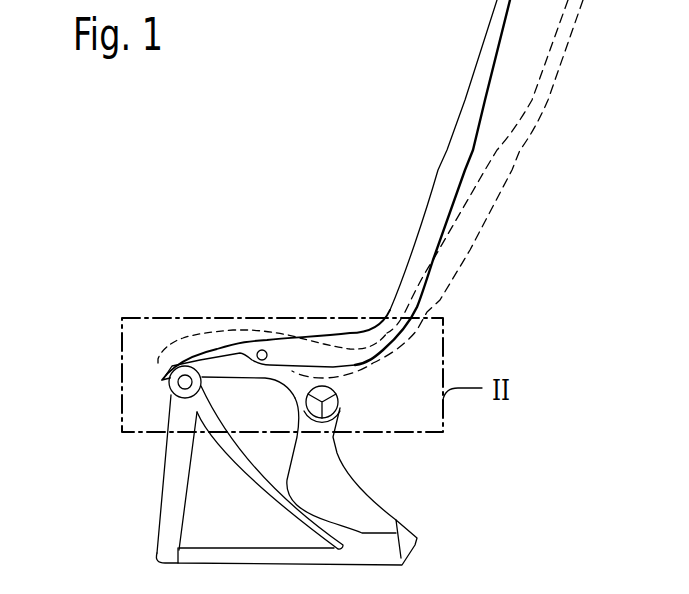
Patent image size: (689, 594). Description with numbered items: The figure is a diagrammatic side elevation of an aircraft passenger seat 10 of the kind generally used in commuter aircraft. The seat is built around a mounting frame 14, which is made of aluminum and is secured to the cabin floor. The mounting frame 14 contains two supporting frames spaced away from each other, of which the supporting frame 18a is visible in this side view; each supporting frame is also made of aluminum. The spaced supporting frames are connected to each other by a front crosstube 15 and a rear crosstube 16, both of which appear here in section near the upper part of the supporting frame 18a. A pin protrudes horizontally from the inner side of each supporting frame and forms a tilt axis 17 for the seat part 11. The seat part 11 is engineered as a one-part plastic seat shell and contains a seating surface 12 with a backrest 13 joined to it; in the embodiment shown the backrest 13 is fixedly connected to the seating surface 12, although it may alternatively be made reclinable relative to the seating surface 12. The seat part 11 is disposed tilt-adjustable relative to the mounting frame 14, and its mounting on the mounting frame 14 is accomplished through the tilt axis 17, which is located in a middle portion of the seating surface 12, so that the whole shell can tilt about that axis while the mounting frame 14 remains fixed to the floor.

The aircraft passenger seat 10 is at (313, 133).
The seat part 11 is at (355, 333).
The seating surface 12 is at (265, 338).
The backrest 13 is at (423, 218).
The mounting frame 14 is at (167, 470).
The front crosstube 15 is at (178, 384).
The rear crosstube 16 is at (331, 406).
The tilt axis 17 is at (262, 361).
The supporting frame 18a is at (167, 530).